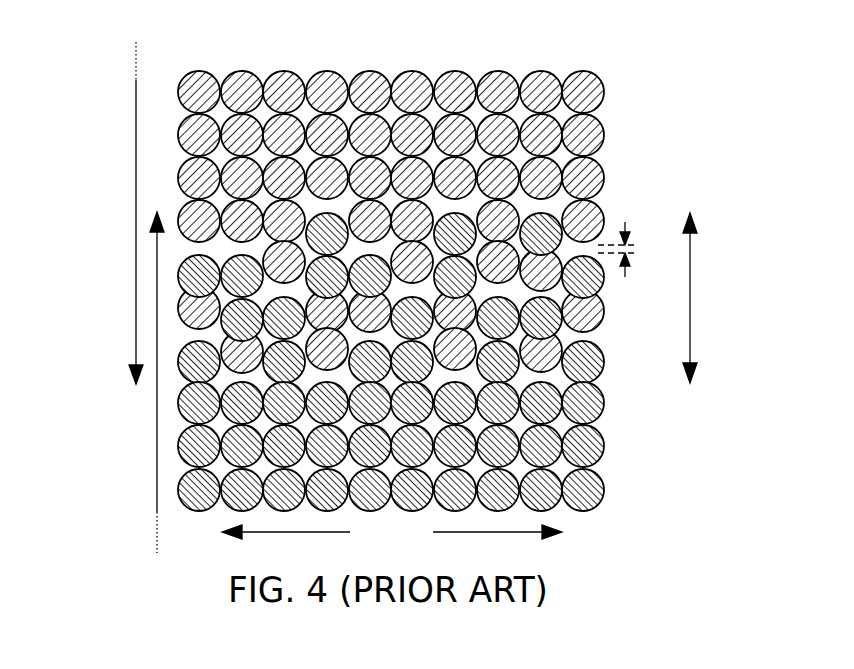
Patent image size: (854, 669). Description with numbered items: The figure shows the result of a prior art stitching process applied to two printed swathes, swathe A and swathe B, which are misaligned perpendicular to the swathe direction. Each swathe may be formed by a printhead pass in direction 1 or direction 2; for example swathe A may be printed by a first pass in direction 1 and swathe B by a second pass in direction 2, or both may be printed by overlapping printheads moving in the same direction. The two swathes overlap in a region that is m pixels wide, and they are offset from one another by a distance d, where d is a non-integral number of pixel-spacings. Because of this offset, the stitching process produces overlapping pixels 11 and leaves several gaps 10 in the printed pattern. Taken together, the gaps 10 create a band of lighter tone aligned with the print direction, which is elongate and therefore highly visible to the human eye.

The gaps 10 is at (457, 207).
The overlapping pixels 11 is at (185, 281).
The swathe A is at (124, 213).
The swathe B is at (147, 382).
The offset distance d is at (629, 249).
The overlap region width m is at (703, 298).
The first print direction 1 is at (286, 543).
The second print direction 2 is at (497, 544).